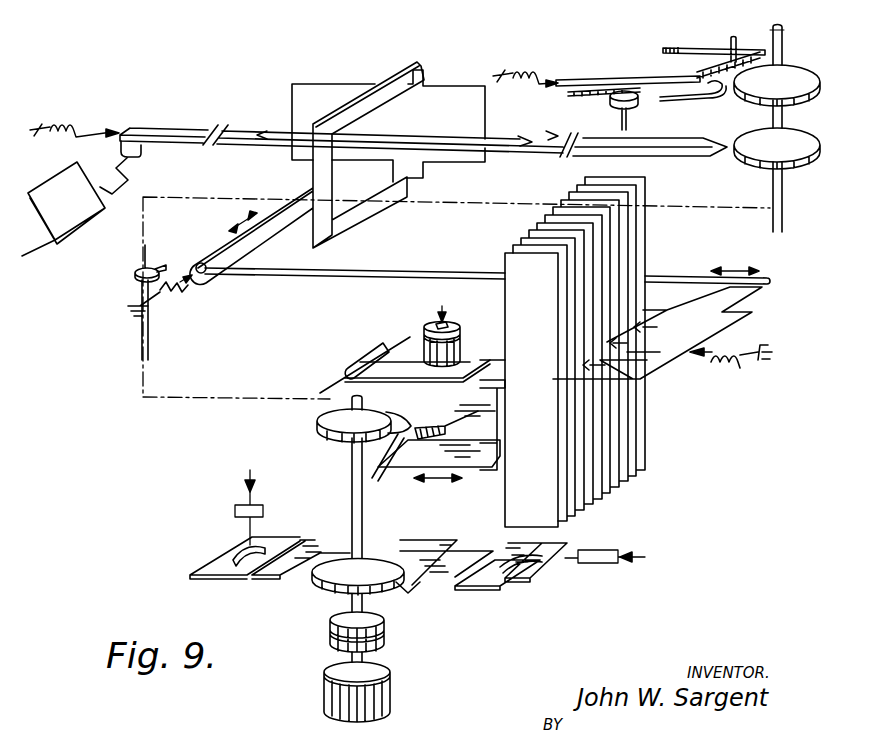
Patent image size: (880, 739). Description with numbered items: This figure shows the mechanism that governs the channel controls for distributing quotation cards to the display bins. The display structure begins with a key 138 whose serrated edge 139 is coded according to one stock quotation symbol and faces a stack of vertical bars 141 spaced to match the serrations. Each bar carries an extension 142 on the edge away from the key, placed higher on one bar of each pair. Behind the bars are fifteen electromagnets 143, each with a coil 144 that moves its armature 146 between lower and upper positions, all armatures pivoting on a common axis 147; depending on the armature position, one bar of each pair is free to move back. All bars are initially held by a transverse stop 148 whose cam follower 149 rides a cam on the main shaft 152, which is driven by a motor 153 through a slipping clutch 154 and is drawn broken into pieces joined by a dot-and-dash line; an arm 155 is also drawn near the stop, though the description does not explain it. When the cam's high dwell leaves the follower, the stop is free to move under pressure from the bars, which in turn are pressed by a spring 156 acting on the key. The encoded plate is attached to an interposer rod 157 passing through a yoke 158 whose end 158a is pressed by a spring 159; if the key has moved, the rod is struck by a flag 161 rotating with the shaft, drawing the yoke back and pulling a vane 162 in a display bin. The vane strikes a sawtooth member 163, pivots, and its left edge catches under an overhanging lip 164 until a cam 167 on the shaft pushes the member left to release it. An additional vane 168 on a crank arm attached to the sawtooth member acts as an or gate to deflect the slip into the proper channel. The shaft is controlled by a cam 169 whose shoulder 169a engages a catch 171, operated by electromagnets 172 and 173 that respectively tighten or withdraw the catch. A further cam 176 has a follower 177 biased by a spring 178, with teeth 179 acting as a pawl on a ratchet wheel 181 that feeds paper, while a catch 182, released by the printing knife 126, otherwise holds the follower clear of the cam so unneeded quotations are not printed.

The printing knife 126 is at (688, 48).
The key 138 is at (748, 310).
The serrated edge 139 is at (650, 330).
The vertical bars 141 is at (616, 276).
The extension 142 is at (492, 360).
The electromagnets 143 is at (443, 305).
The coil 144 is at (426, 324).
The armature 146 is at (412, 374).
The common axis 147 is at (342, 375).
The transverse stop 148 is at (492, 470).
The cam follower 149 is at (420, 427).
The main shaft 152 is at (149, 332).
The motor 153 is at (390, 672).
The slipping clutch 154 is at (385, 630).
The arm 155 is at (382, 472).
The spring 156 is at (752, 364).
The interposer rod 157 is at (405, 270).
The yoke 158 is at (352, 220).
The end of yoke 158a is at (206, 280).
The spring 159 is at (178, 298).
The flag 161 is at (150, 262).
The vane 162 is at (482, 86).
The sawtooth member 163 is at (272, 150).
The overhanging lip 164 is at (283, 101).
The cam 167 is at (742, 160).
The additional vane 168 is at (86, 226).
The cam 169 is at (322, 590).
The shoulder 169a is at (408, 595).
The catch 171 is at (420, 578).
The electromagnet 172 is at (492, 590).
The electromagnet 173 is at (220, 582).
The cam 176 is at (790, 64).
The cam follower 177 is at (708, 98).
The spring 178 is at (532, 72).
The teeth 179 is at (600, 92).
The ratchet wheel 181 is at (627, 108).
The catch 182 is at (768, 40).